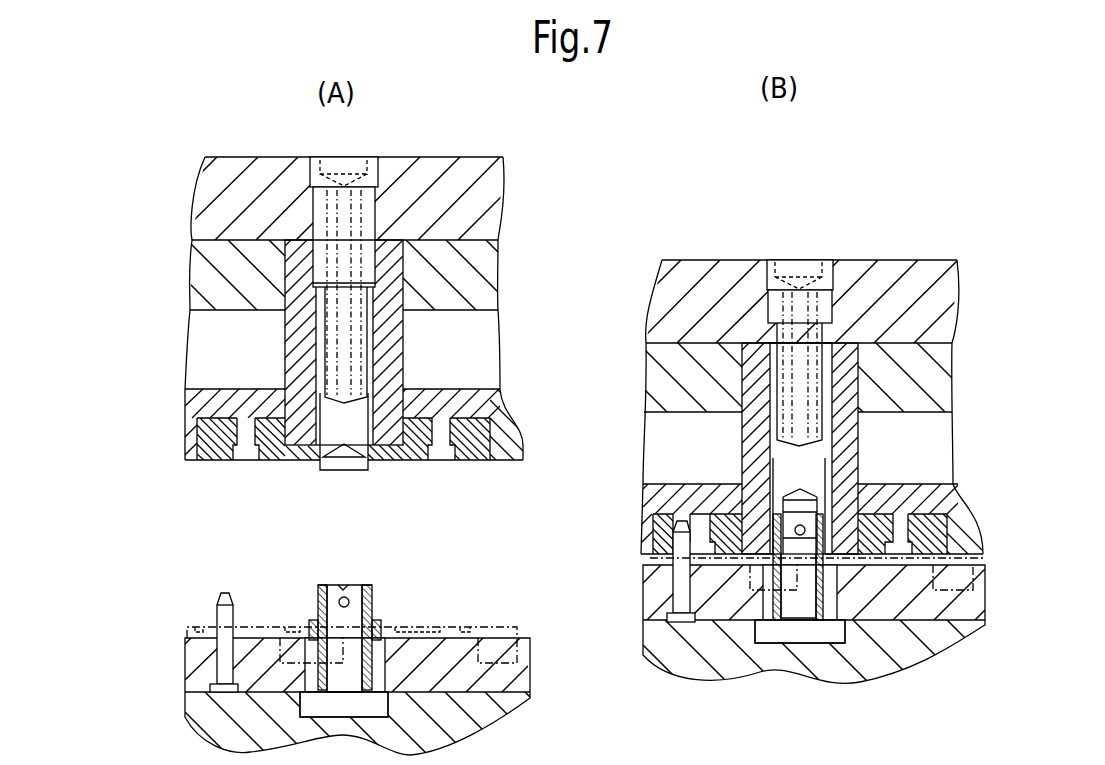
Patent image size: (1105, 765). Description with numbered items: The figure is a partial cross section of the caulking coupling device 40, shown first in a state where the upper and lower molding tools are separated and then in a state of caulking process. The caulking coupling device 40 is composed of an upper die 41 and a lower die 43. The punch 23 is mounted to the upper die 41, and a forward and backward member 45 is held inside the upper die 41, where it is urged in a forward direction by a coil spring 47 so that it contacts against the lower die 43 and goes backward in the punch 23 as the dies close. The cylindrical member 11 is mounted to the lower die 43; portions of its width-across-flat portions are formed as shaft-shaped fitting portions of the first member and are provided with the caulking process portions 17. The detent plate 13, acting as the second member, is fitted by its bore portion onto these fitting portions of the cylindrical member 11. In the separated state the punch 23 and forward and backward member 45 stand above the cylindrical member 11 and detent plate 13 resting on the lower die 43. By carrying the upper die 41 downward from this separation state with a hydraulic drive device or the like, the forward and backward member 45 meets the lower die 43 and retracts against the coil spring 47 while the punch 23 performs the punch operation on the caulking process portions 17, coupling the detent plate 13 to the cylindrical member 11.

In FIG. 7A, the cylindrical member 11 is at (371, 579).
In FIG. 7B, the cylindrical member 11 is at (826, 594).
In FIG. 7A, the detent plate 13 is at (444, 625).
In FIG. 7B, the detent plate 13 is at (984, 557).
In FIG. 7A, the caulking process portions 17 is at (317, 623).
In FIG. 7A, the punch 23 is at (405, 357).
In FIG. 7B, the punch 23 is at (860, 450).
In FIG. 7A, the caulking coupling device 40 is at (350, 310).
In FIG. 7B, the caulking coupling device 40 is at (803, 350).
In FIG. 7A, the upper die 41 is at (496, 252).
In FIG. 7B, the upper die 41 is at (951, 350).
In FIG. 7A, the lower die 43 is at (534, 635).
In FIG. 7B, the lower die 43 is at (990, 630).
In FIG. 7A, the forward and backward member 45 is at (320, 464).
In FIG. 7B, the forward and backward member 45 is at (799, 506).
In FIG. 7A, the coil spring 47 is at (330, 344).
In FIG. 7B, the coil spring 47 is at (780, 375).